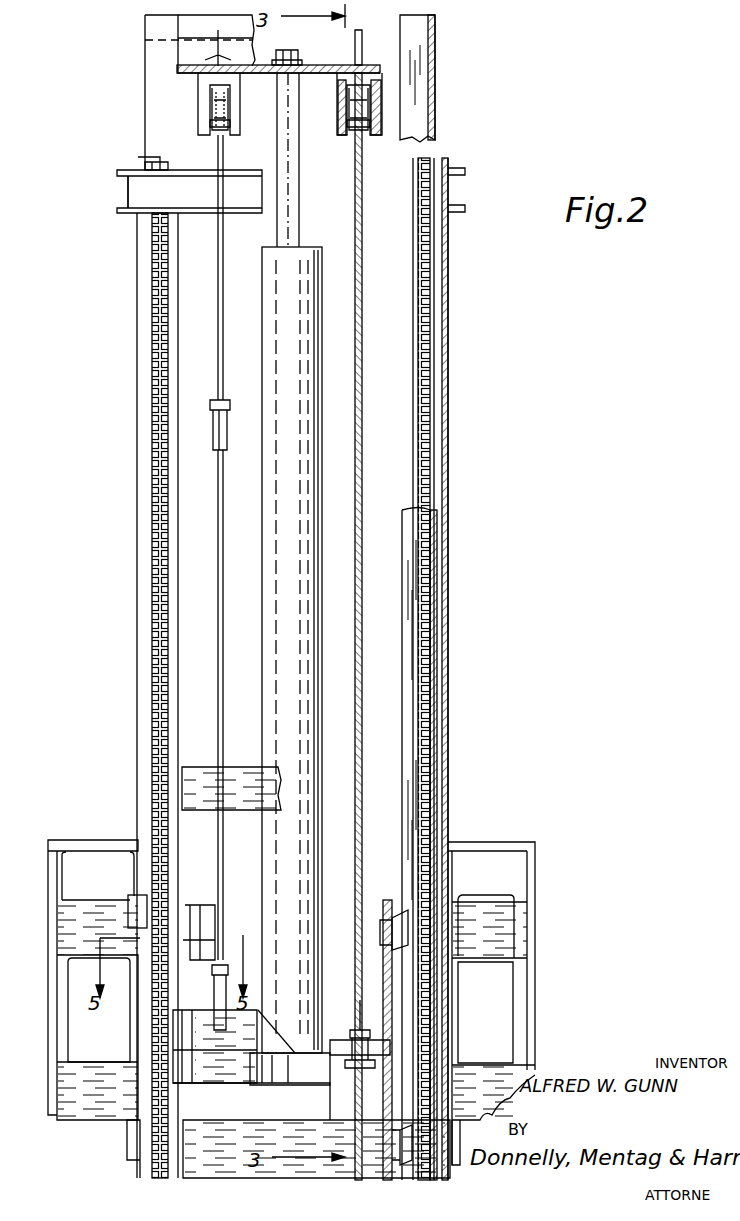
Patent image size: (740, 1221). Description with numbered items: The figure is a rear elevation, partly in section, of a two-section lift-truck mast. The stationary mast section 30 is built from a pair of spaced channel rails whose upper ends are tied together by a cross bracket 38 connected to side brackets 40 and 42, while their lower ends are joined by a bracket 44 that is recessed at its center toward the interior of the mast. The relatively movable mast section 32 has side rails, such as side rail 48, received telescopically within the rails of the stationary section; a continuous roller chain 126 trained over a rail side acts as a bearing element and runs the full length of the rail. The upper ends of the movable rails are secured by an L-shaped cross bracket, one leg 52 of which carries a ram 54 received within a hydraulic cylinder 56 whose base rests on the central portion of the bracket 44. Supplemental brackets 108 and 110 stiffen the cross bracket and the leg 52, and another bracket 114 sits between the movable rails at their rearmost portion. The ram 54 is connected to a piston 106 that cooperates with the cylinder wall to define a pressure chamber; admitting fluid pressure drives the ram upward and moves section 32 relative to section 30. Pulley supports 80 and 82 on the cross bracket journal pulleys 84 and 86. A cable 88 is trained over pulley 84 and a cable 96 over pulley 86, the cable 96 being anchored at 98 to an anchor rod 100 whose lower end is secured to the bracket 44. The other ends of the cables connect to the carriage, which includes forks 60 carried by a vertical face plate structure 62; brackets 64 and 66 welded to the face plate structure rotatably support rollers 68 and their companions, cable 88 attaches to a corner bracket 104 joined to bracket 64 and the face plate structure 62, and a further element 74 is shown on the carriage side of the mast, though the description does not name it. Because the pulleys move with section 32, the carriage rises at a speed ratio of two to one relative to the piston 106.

The stationary mast section 30 is at (126, 353).
The movable mast section 32 is at (132, 75).
The cross bracket 38 is at (195, 172).
The side bracket 40 is at (455, 172).
The side bracket 42 is at (117, 172).
The bracket 44 is at (185, 1055).
The side rail 48 is at (435, 60).
The leg 52 is at (300, 58).
The ram 54 is at (299, 208).
The hydraulic cylinder 56 is at (275, 545).
The forks 60 is at (132, 1023).
The face plate structure 62 is at (68, 840).
The bracket 64 is at (390, 1010).
The bracket 66 is at (214, 905).
The rollers 68 is at (408, 922).
The stop block 74 is at (128, 918).
The pulley support 80 is at (380, 85).
The pulley support 82 is at (200, 95).
The pulley 84 is at (382, 115).
The pulley 86 is at (215, 122).
The cable 88 is at (362, 273).
The cable 96 is at (218, 288).
The anchor 98 is at (215, 418).
The anchor rod 100 is at (220, 660).
The corner bracket 104 is at (355, 1047).
The piston 106 is at (300, 1085).
The supplemental bracket 108 is at (145, 46).
The supplemental bracket 110 is at (358, 45).
The bracket 114 is at (200, 782).
The roller chain 126 is at (160, 553).